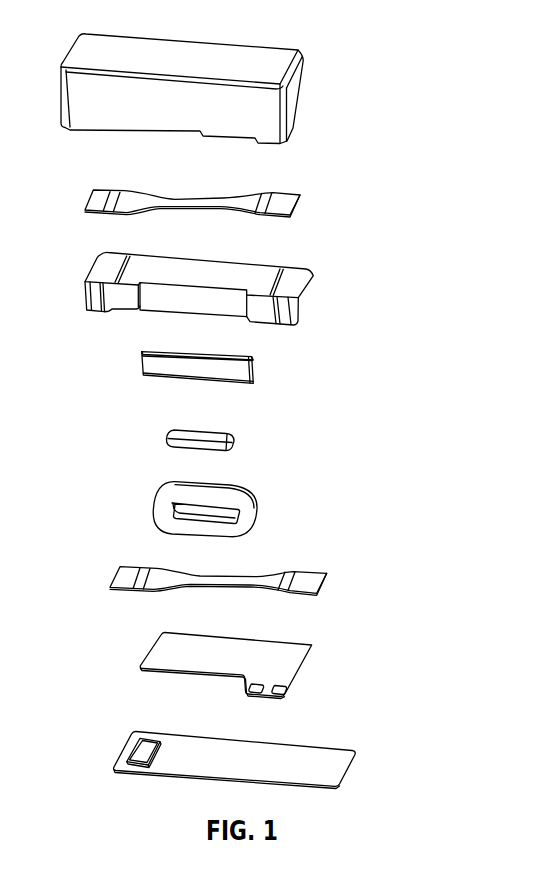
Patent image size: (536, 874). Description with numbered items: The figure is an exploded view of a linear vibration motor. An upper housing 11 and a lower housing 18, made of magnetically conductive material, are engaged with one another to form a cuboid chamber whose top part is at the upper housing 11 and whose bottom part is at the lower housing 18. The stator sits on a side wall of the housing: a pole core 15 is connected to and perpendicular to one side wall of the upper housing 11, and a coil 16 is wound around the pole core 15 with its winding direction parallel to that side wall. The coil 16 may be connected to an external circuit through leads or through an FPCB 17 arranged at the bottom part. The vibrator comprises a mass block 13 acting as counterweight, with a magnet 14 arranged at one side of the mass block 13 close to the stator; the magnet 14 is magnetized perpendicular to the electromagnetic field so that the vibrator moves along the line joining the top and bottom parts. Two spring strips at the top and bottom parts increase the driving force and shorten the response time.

The upper housing 11 is at (247, 115).
The mass block 13 is at (248, 275).
The magnet 14 is at (242, 372).
The pole core 15 is at (220, 445).
The coil 16 is at (248, 517).
The FPCB 17 is at (250, 658).
The lower housing 18 is at (237, 760).